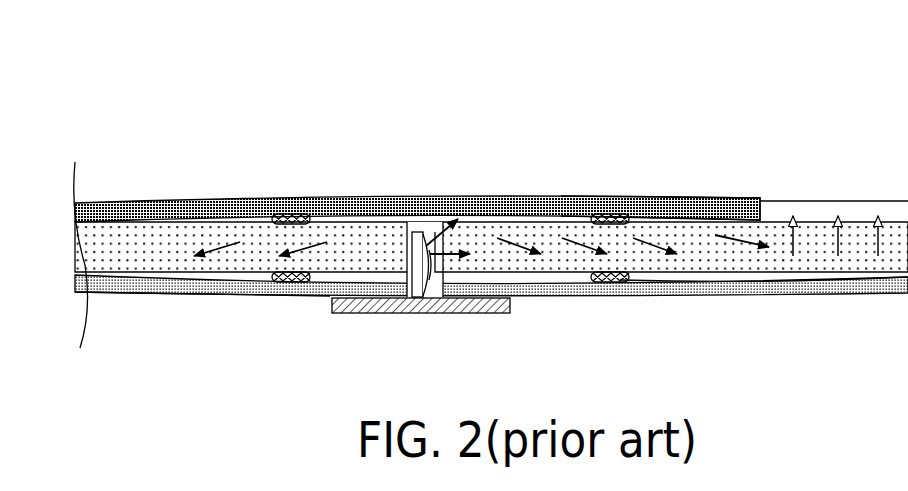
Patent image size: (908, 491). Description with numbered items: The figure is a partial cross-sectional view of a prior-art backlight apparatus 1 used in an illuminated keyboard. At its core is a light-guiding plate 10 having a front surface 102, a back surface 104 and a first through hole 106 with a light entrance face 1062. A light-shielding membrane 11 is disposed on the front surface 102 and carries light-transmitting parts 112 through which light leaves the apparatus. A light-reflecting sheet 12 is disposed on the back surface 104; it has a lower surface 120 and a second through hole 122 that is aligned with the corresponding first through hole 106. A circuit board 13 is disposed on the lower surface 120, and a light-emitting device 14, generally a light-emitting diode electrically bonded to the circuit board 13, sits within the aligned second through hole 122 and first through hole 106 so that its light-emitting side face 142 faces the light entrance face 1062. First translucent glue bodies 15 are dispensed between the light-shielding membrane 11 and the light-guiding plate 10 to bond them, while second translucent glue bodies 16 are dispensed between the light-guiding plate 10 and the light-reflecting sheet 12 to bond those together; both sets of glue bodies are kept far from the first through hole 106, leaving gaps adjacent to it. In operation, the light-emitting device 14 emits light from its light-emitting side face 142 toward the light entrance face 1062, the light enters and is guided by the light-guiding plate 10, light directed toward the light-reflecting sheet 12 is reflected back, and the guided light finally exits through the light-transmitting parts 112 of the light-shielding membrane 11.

The backlight apparatus 1 is at (460, 74).
The light-guiding plate 10 is at (232, 238).
The front surface 102 is at (140, 220).
The back surface 104 is at (140, 294).
The first through hole 106 is at (435, 226).
The light entrance face 1062 is at (433, 242).
The light-shielding membrane 11 is at (703, 212).
The light-transmitting part 112 is at (758, 193).
The light-reflecting sheet 12 is at (817, 284).
The lower surface 120 is at (218, 296).
The second through hole 122 is at (437, 299).
The circuit board 13 is at (434, 262).
The light-emitting device 14 is at (412, 299).
The light-emitting side face 142 is at (433, 263).
The first translucent glue body 15 is at (291, 214).
The second translucent glue body 16 is at (622, 280).